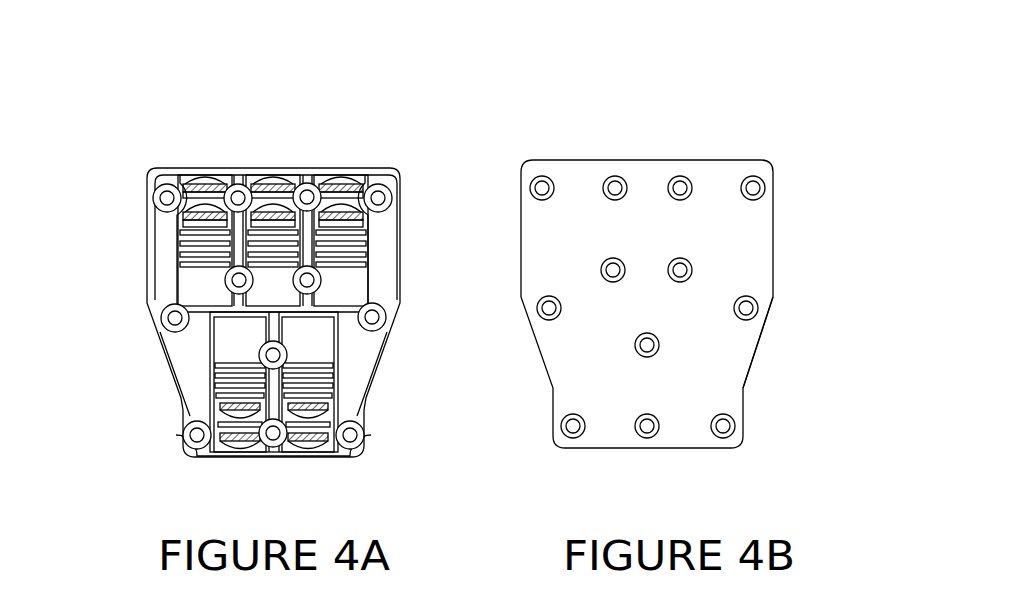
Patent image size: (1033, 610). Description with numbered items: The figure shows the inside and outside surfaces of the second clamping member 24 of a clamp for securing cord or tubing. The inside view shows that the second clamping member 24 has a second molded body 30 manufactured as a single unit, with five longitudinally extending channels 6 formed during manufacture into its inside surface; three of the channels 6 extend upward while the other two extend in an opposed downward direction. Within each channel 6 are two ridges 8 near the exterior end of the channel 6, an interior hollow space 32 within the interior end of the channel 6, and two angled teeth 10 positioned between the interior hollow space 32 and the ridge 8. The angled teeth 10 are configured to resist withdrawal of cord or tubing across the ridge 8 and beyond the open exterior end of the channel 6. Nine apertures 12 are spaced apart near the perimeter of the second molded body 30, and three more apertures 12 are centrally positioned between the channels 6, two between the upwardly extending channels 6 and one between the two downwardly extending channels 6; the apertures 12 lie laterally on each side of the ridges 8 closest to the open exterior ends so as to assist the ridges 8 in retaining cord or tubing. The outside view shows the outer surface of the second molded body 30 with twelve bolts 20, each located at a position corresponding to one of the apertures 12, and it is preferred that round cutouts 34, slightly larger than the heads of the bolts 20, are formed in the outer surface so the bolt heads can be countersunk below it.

In FIG. 4A, the channel 6 is at (226, 293).
In FIG. 4A, the ridge 8 is at (203, 168).
In FIG. 4A, the angled teeth 10 is at (190, 246).
In FIG. 4A, the aperture 12 is at (373, 320).
In FIG. 4B, the bolt 20 is at (752, 182).
In FIG. 4A, the second clamping member 24 is at (367, 142).
In FIG. 4B, the second clamping member 24 is at (650, 133).
In FIG. 4A, the second molded body 30 is at (168, 363).
In FIG. 4B, the second molded body 30 is at (740, 353).
In FIG. 4A, the interior hollow space 32 is at (343, 287).
In FIG. 4B, the round cutout 34 is at (550, 318).